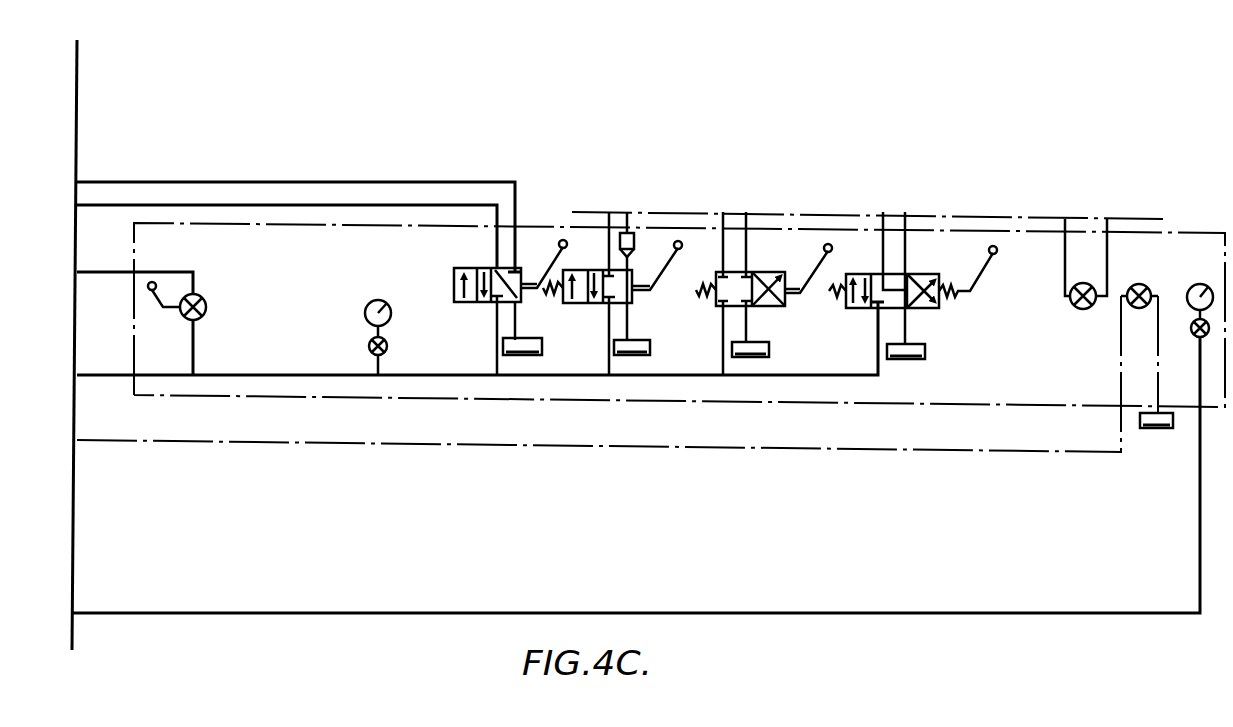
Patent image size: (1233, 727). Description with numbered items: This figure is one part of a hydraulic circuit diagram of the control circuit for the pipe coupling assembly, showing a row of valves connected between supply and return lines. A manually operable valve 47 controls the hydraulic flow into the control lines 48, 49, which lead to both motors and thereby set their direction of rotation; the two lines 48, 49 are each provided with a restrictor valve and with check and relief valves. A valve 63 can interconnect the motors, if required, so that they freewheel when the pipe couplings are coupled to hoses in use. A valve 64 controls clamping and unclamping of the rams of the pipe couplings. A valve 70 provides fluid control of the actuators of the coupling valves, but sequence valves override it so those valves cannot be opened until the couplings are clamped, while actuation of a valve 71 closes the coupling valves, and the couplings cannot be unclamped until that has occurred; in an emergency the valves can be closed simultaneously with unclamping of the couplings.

The manually operable valve 47 is at (940, 309).
The control line 48 is at (883, 238).
The control line 49 is at (905, 255).
The valve 63 is at (1085, 310).
The valve 64 is at (472, 303).
The valve 70 is at (583, 304).
The valve 71 is at (712, 308).